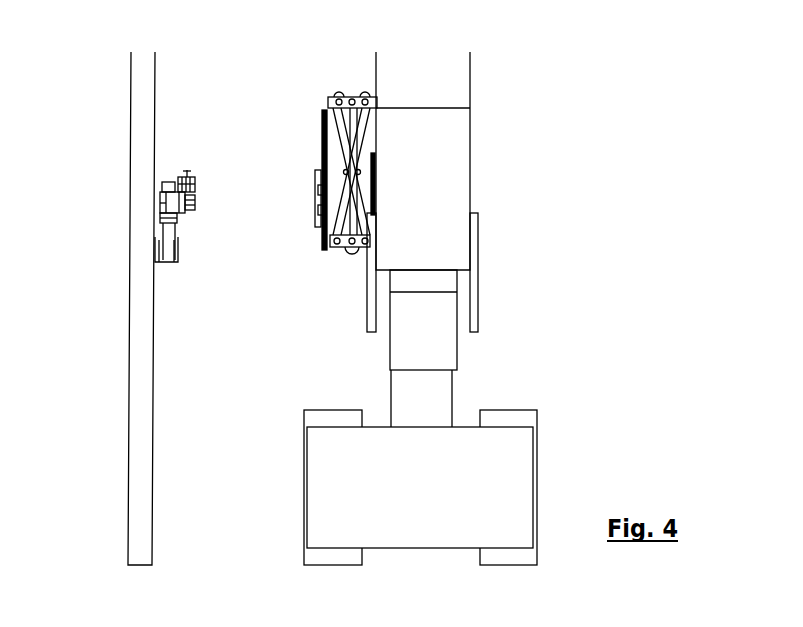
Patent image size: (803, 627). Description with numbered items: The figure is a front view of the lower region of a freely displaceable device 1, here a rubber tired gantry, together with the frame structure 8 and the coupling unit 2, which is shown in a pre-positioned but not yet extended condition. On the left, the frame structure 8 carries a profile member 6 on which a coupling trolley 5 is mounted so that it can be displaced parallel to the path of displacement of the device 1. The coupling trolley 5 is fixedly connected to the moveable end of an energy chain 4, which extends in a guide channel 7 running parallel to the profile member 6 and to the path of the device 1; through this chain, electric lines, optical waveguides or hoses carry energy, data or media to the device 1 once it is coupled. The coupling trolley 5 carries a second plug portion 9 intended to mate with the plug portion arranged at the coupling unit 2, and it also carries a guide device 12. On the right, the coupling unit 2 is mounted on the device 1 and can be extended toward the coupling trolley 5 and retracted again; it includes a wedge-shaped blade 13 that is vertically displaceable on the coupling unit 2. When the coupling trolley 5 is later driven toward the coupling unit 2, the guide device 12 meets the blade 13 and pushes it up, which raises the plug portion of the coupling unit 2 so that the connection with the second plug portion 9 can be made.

The device 1 is at (480, 242).
The coupling unit 2 is at (332, 253).
The energy chain 4 is at (165, 230).
The coupling trolley 5 is at (158, 197).
The profile member 6 is at (165, 185).
The guide channel 7 is at (177, 248).
The frame structure 8 is at (122, 484).
The second plug portion 9 is at (194, 197).
The guide device 12 is at (187, 168).
The blade 13 is at (317, 172).